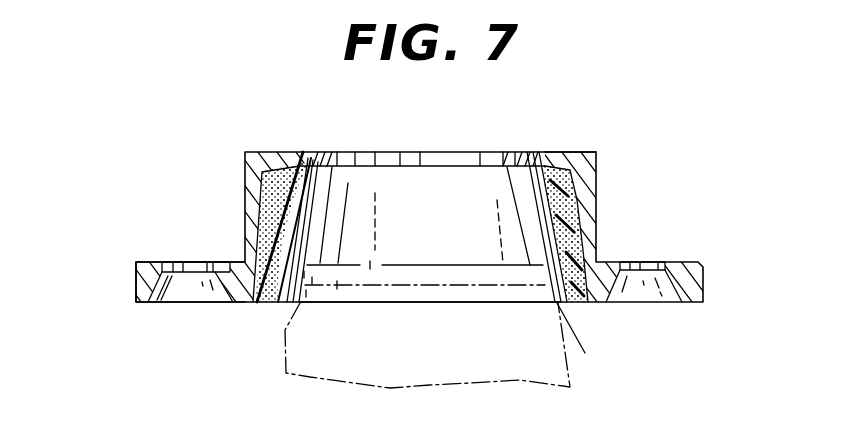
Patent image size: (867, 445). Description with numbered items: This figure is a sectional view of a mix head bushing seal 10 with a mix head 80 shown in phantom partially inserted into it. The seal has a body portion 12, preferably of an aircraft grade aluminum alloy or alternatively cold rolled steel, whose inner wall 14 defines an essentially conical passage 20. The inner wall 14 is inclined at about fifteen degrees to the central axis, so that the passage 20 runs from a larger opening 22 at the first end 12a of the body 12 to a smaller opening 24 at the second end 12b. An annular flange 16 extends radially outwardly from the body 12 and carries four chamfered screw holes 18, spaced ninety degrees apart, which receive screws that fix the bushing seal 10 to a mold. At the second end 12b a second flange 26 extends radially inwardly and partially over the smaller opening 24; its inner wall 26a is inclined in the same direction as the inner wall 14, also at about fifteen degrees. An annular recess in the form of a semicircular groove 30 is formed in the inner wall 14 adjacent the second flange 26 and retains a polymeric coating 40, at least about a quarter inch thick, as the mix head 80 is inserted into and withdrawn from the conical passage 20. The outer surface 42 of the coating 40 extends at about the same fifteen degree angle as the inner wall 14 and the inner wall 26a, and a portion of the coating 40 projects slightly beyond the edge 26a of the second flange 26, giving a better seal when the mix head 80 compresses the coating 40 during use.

The mix head bushing seal 10 is at (627, 143).
The body portion 12 is at (597, 216).
The first end 12a is at (597, 302).
The second end 12b is at (580, 152).
The inner wall 14 is at (591, 349).
The annular flange 16 is at (150, 262).
The chamfered screw holes 18 is at (157, 303).
The passage 20 is at (302, 303).
The larger opening 22 is at (253, 300).
The smaller opening 24 is at (320, 152).
The second flange 26 is at (550, 150).
The inner wall of second flange 26a is at (520, 152).
The groove 30 is at (582, 177).
The polymeric coating 40 is at (275, 212).
The outer surface of coating 42 is at (540, 190).
The mix head 80 is at (433, 377).